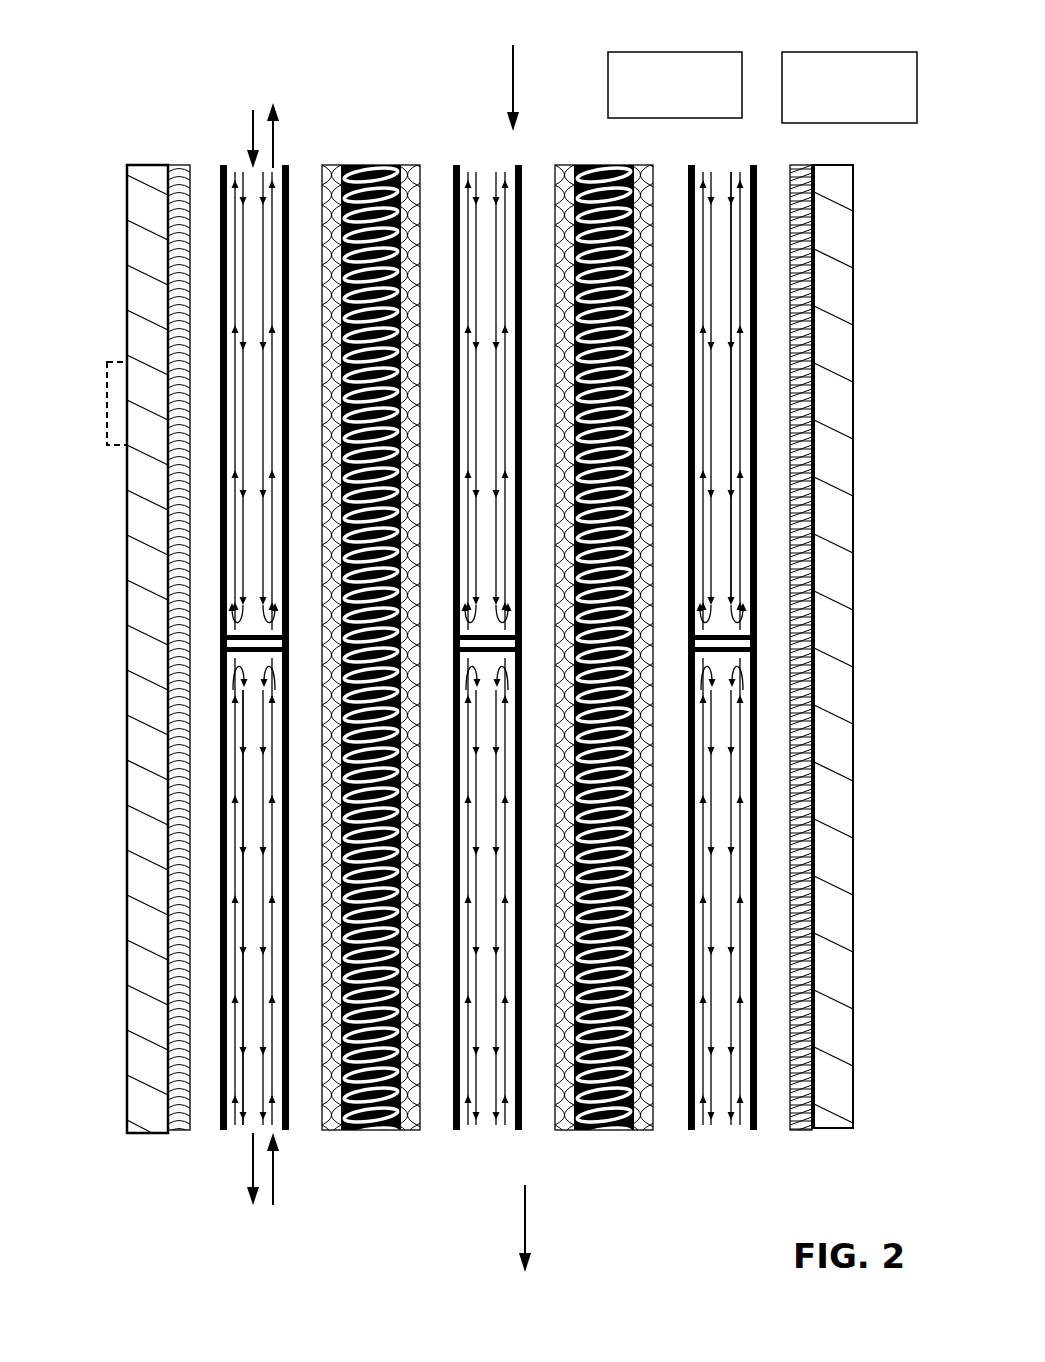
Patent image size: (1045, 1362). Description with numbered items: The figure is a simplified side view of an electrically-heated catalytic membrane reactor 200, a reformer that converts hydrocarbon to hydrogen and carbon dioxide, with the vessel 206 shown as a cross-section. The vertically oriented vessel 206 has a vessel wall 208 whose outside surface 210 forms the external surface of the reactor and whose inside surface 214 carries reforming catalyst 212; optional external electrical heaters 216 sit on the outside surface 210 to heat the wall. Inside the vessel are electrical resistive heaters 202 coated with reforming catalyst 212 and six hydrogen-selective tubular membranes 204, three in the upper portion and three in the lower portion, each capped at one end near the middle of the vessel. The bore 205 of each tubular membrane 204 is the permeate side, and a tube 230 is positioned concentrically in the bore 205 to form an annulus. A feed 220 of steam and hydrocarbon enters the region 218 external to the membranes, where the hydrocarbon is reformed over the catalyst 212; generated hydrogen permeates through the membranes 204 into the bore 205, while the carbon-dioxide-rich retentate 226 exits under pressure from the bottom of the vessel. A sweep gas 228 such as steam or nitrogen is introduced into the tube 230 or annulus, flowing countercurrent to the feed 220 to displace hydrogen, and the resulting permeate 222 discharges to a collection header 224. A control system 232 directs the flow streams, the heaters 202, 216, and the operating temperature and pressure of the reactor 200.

The electrically-heated catalytic membrane reactor 200 is at (703, 1269).
The electrical resistive heater 202 is at (360, 166).
The hydrogen-selective tubular membrane 204 is at (220, 870).
The bore 205 is at (740, 313).
The vessel 206 is at (127, 272).
The vessel wall 208 is at (127, 330).
The outside surface 210 is at (853, 492).
The reforming catalyst 212 is at (320, 448).
The inside surface 214 is at (800, 1117).
The electrical heater 216 is at (112, 400).
The region 218 is at (535, 197).
The feed 220 is at (510, 86).
The permeate 222 is at (275, 140).
The collection header 224 is at (860, 52).
The retentate 226 is at (526, 1220).
The sweep gas 228 is at (250, 131).
The tube 230 is at (243, 992).
The control system 232 is at (682, 52).